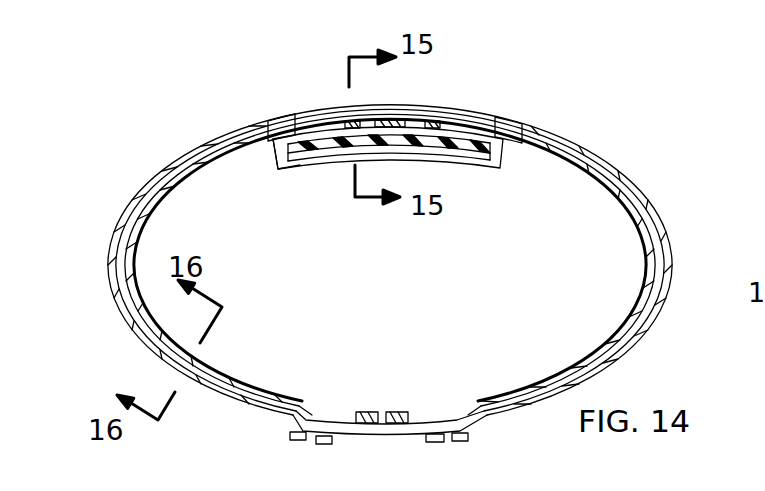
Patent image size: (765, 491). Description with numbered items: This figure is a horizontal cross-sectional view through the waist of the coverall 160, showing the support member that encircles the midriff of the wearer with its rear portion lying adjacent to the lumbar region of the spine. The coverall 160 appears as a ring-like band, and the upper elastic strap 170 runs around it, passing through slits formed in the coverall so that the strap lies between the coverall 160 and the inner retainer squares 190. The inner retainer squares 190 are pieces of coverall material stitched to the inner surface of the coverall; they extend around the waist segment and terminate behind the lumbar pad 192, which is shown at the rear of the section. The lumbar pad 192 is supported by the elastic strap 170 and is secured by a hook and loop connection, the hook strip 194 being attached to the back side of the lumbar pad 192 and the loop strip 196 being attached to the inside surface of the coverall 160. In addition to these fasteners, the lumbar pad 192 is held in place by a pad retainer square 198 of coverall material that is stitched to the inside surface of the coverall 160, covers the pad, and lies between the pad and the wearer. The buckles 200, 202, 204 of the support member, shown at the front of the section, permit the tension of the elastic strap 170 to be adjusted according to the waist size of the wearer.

The coverall 160 is at (637, 192).
The upper elastic strap 170 is at (666, 250).
The inner retainer squares 190 is at (148, 210).
The lumbar pad 192 is at (453, 167).
The hook strip 194 is at (348, 125).
The loop strip 196 is at (433, 113).
The pad retainer square 198 is at (308, 168).
The buckle 200 is at (275, 122).
The buckle 202 is at (382, 115).
The buckle 204 is at (497, 128).